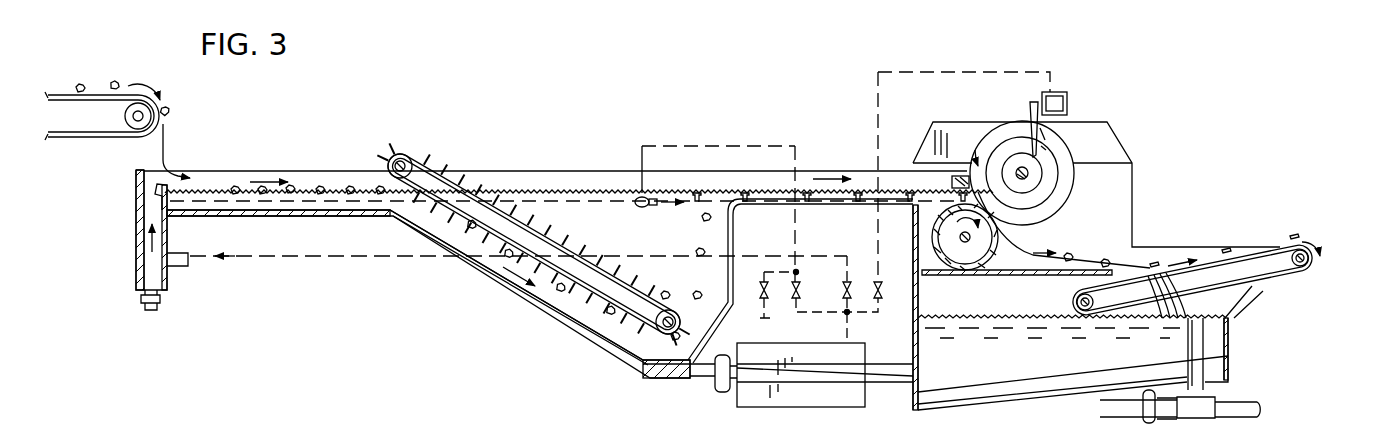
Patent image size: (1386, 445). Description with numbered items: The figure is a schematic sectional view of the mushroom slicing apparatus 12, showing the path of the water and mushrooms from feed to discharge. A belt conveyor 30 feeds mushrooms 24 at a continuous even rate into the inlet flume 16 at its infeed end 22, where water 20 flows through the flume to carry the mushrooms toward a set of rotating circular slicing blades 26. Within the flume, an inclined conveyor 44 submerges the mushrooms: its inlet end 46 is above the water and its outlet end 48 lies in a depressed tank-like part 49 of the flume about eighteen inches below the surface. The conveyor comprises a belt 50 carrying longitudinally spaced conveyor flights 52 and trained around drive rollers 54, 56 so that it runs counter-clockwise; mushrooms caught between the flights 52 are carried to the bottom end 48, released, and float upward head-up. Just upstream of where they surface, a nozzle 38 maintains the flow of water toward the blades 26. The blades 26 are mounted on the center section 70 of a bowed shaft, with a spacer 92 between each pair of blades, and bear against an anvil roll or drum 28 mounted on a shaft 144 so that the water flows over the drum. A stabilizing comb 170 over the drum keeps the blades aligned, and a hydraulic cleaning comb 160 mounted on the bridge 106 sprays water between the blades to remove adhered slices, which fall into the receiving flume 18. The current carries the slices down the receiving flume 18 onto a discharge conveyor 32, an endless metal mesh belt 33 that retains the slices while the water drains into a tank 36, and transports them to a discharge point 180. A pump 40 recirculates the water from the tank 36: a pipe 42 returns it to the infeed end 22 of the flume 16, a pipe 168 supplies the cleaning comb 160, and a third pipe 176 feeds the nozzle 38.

The mushroom slicing apparatus 12 is at (1140, 127).
The inlet flume 16 is at (268, 217).
The receiving flume 18 is at (925, 263).
The water 20 is at (549, 189).
The infeed end 22 is at (190, 172).
The mushrooms 24 is at (112, 84).
The circular slicing blades 26 is at (1046, 179).
The anvil roll or drum 28 is at (996, 262).
The belt conveyor 30 is at (93, 136).
The discharge conveyor 32 is at (1226, 289).
The endless metal mesh belt 33 is at (1306, 272).
The tank 36 is at (1230, 360).
The nozzle 38 is at (637, 207).
The pump 40 is at (790, 408).
The pipe 42 is at (318, 262).
The inclined conveyor 44 is at (504, 223).
The inlet end 46 is at (393, 177).
The outlet end 48 is at (690, 362).
The depressed tank-like part 49 is at (615, 355).
The belt 50 is at (462, 175).
The conveyor flights 52 is at (408, 145).
The drive roller 54 is at (432, 162).
The drive roller 56 is at (684, 318).
The shaft center section 70 is at (1032, 170).
The spacer 92 is at (1042, 186).
The bridge 106 is at (1069, 103).
The shaft 144 is at (966, 244).
The hydraulic cleaning comb 160 is at (1028, 104).
The pipe 168 is at (876, 84).
The stabilizing comb 170 is at (950, 181).
The third pipe 176 is at (685, 145).
The discharge point 180 is at (1318, 264).